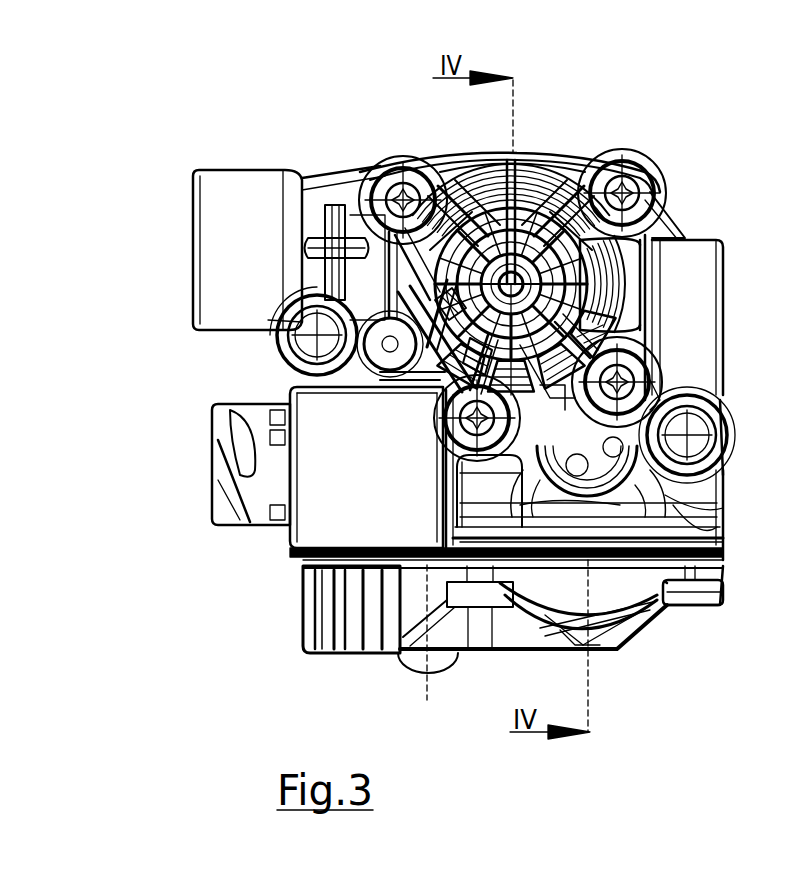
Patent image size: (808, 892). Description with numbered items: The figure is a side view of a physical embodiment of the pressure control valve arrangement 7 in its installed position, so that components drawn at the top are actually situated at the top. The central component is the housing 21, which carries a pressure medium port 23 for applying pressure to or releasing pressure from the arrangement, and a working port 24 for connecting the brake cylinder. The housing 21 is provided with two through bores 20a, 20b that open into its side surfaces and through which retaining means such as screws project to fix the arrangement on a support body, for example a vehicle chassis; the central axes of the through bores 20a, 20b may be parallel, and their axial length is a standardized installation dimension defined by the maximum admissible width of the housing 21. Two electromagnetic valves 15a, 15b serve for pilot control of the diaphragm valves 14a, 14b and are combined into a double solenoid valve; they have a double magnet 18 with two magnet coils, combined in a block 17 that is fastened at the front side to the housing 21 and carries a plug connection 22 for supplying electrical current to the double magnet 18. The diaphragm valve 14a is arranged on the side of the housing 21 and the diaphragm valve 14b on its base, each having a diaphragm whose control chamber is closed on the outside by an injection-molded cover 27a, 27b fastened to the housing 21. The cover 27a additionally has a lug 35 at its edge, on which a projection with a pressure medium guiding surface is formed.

The pressure control valve arrangement 7 is at (665, 108).
The cover 27a is at (440, 168).
The diaphragm valve 14a is at (690, 214).
The working port 24 is at (705, 270).
The pressure medium port 23 is at (200, 222).
The through bore 20a is at (290, 322).
The through bore 20b is at (697, 427).
The electromagnetic valve 15a is at (294, 473).
The electromagnetic valve 15b is at (222, 366).
The plug connection 22 is at (250, 490).
The block 17 is at (317, 490).
The double magnet 18 is at (310, 532).
The housing 21 is at (706, 505).
The lug 35 is at (668, 505).
The diaphragm valve 14b is at (325, 662).
The cover 27b is at (655, 627).